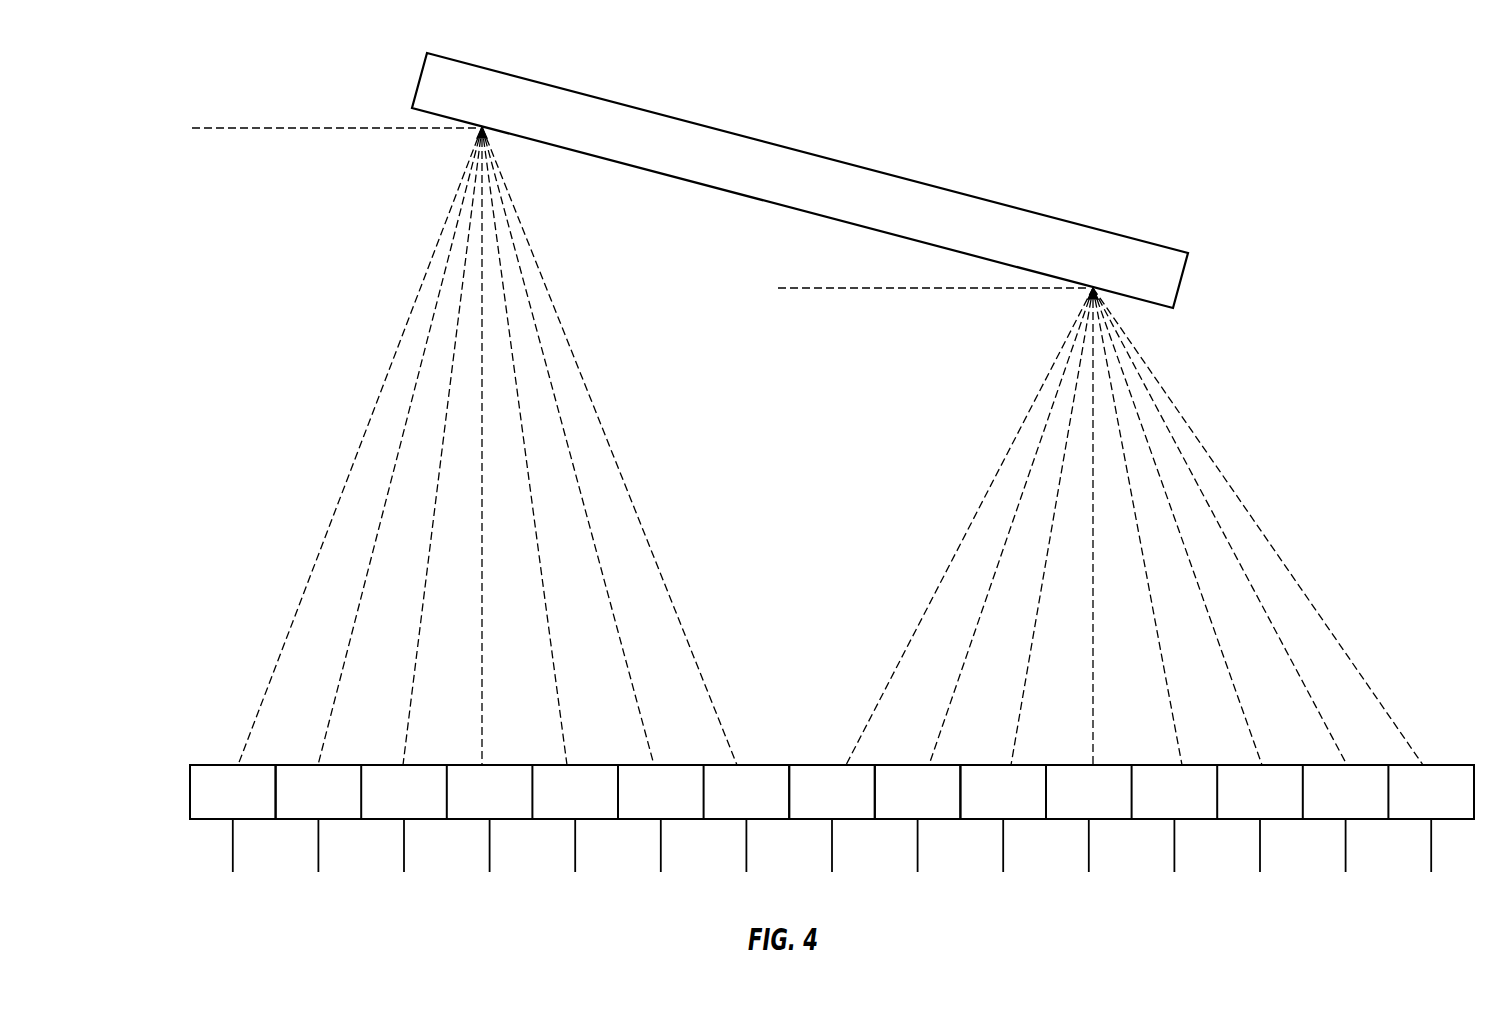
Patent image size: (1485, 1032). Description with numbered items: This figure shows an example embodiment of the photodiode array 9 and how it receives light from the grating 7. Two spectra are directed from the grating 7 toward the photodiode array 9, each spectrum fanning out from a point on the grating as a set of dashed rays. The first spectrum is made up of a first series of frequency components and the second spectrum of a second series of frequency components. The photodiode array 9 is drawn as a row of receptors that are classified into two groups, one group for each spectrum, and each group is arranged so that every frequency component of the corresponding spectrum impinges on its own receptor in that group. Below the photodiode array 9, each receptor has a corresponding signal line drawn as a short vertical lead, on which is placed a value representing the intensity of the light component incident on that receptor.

The grating 7 is at (1143, 240).
The photodiode array 9 is at (1435, 763).